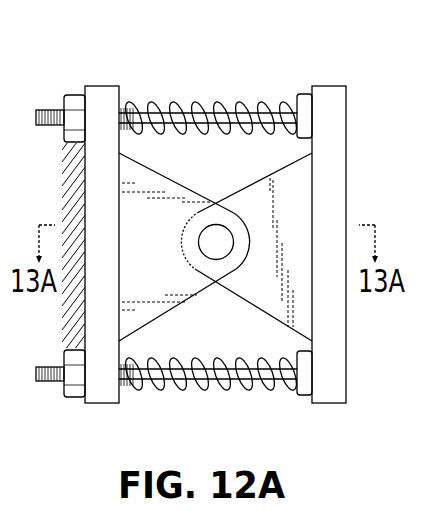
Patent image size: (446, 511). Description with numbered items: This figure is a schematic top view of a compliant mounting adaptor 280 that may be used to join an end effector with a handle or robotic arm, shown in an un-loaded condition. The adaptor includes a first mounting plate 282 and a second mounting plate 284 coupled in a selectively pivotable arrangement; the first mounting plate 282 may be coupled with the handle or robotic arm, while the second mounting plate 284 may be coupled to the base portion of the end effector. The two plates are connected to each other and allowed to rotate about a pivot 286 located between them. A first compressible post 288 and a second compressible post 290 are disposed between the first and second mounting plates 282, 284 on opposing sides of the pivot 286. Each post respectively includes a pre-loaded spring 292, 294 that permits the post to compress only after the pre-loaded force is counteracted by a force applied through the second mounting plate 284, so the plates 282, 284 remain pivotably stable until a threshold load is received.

The compliant mounting adaptor 280 is at (380, 71).
The first mounting plate 282 is at (107, 86).
The second mounting plate 284 is at (327, 86).
The pivot 286 is at (233, 232).
The first compressible post 288 is at (163, 79).
The second compressible post 290 is at (158, 402).
The pre-loaded spring 292 is at (231, 102).
The pre-loaded spring 294 is at (202, 390).